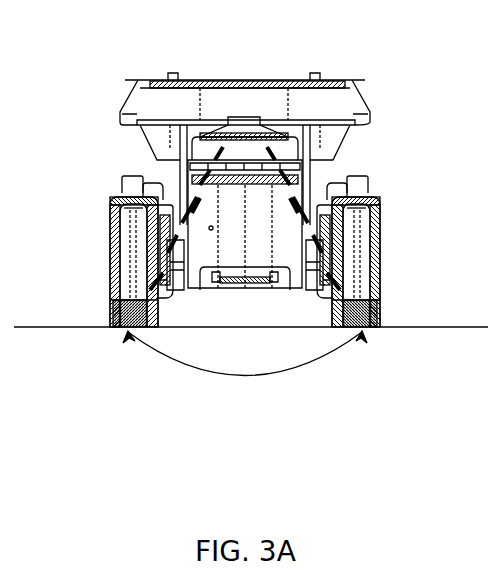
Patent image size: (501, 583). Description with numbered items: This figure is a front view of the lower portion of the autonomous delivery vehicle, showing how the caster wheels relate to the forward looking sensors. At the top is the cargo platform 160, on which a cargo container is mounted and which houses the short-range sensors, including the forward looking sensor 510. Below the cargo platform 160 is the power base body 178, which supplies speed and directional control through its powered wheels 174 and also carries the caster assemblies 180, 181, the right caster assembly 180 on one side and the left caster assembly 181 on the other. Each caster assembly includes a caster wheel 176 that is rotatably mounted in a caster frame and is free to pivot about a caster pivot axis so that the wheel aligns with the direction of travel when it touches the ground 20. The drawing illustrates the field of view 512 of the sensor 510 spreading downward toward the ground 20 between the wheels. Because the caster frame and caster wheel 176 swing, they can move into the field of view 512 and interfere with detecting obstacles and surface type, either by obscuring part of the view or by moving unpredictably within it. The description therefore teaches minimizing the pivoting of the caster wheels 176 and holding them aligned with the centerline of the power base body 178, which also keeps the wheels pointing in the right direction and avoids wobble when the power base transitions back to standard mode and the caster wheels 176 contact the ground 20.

The ground 20 is at (62, 328).
The cargo platform 160 is at (347, 108).
The powered wheel 174 is at (376, 318).
The caster wheel 176 is at (107, 258).
The power base body 178 is at (258, 258).
The right caster assembly 180 is at (108, 177).
The left caster assembly 181 is at (402, 185).
The short-range sensor 510 is at (241, 118).
The field of view 512 is at (306, 368).